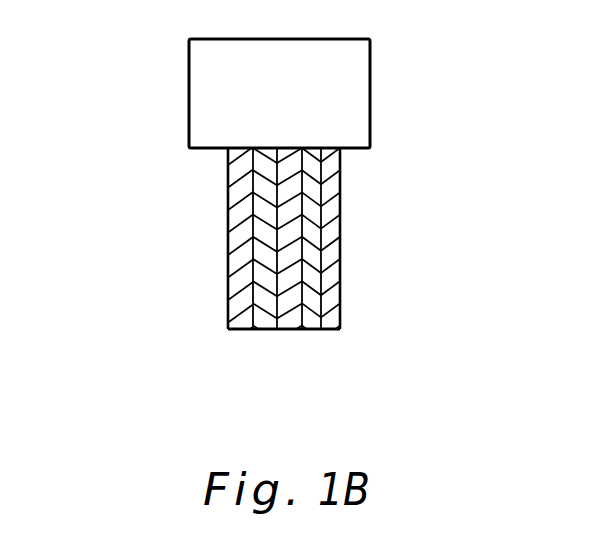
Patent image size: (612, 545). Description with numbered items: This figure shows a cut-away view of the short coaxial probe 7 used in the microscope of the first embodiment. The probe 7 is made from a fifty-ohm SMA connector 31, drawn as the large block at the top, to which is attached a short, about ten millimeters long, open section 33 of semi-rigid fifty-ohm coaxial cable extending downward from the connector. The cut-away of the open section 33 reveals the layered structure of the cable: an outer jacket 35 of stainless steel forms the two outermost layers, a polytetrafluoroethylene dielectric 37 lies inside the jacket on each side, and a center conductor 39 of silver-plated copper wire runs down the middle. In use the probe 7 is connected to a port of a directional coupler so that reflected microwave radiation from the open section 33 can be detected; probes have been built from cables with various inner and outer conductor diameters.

The short coaxial probe 7 is at (122, 262).
The SMA connector 31 is at (370, 108).
The open section of coaxial cable 33 is at (407, 147).
The outer jacket 35 is at (227, 320).
The dielectric 37 is at (260, 322).
The center conductor 39 is at (285, 324).